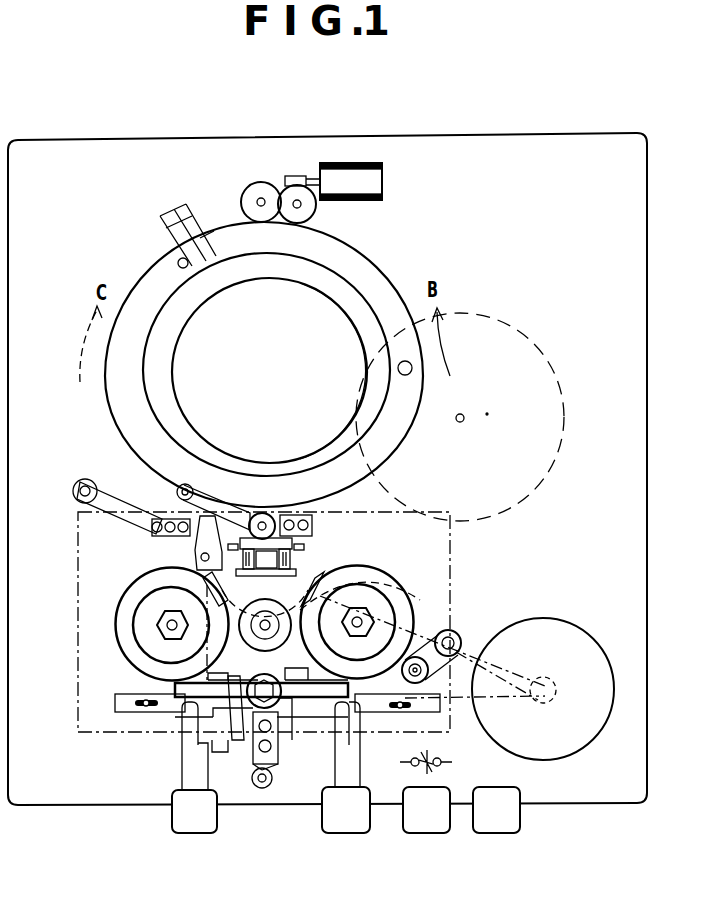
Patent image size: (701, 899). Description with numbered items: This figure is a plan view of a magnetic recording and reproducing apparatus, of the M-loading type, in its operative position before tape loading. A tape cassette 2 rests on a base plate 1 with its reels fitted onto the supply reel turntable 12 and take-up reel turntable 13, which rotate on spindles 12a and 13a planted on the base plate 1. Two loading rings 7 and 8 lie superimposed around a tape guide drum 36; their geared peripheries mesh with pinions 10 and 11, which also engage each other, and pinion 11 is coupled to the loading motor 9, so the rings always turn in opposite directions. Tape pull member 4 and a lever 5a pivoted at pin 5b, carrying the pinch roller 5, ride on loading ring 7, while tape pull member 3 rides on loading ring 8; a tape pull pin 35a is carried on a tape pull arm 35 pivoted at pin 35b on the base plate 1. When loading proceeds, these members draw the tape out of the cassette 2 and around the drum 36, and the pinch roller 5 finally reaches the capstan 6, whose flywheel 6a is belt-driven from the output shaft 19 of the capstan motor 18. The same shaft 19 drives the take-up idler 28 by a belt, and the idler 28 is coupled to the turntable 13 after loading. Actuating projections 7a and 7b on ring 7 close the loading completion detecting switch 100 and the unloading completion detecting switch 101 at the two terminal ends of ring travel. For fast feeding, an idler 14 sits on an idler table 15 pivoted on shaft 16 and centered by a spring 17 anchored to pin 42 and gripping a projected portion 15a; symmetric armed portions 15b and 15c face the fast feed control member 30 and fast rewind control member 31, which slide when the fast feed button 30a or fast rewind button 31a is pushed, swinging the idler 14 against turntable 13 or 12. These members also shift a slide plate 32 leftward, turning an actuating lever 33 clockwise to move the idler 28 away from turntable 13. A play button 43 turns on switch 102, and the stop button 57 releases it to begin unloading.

The base plate 1 is at (626, 805).
The tape cassette 2 is at (78, 664).
The tape pull member 3 is at (185, 553).
The tape pull member 4 is at (314, 527).
The pinch roller 5 is at (300, 547).
The lever 5a is at (232, 515).
The pin 5b is at (186, 486).
The capstan 6 is at (464, 416).
The flywheel 6a is at (536, 347).
The loading ring 7 is at (352, 237).
The actuating projection 7a is at (410, 378).
The actuating projection 7b is at (178, 262).
The loading ring 8 is at (384, 277).
The loading motor 9 is at (356, 172).
The pinion 10 is at (259, 180).
The pinion 11 is at (298, 185).
The supply reel turntable 12 is at (142, 602).
The spindle 12a is at (162, 630).
The take-up reel turntable 13 is at (368, 590).
The spindle 13a is at (365, 608).
The idler 14 is at (232, 720).
The idler table 15 is at (304, 700).
The projected portion 15a is at (284, 712).
The armed portion 15b is at (178, 718).
The armed portion 15c is at (352, 718).
The shaft 16 is at (262, 655).
The spring 17 is at (276, 765).
The capstan motor 18 is at (556, 752).
The output shaft 19 is at (560, 688).
The take-up idler 28 is at (457, 635).
The fast feed control member 30 is at (182, 766).
The fast feed button 30a is at (176, 826).
The fast rewind control member 31 is at (365, 798).
The fast rewind button 31a is at (342, 834).
The slide plate 32 is at (116, 706).
The actuating lever 33 is at (420, 656).
The tape pull arm 35 is at (82, 512).
The tape pull pin 35a is at (152, 532).
The pin 35b is at (76, 484).
The tape guide drum 36 is at (183, 368).
The pin 42 is at (254, 790).
The play button 43 is at (424, 834).
The stop button 57 is at (494, 834).
The loading completion detecting switch 100 is at (210, 228).
The unloading completion detecting switch 101 is at (166, 232).
The switch 102 is at (428, 756).